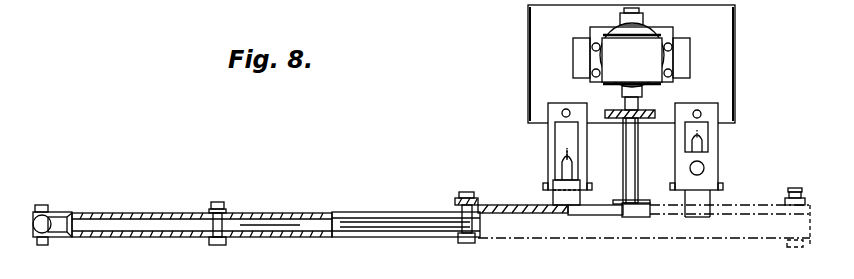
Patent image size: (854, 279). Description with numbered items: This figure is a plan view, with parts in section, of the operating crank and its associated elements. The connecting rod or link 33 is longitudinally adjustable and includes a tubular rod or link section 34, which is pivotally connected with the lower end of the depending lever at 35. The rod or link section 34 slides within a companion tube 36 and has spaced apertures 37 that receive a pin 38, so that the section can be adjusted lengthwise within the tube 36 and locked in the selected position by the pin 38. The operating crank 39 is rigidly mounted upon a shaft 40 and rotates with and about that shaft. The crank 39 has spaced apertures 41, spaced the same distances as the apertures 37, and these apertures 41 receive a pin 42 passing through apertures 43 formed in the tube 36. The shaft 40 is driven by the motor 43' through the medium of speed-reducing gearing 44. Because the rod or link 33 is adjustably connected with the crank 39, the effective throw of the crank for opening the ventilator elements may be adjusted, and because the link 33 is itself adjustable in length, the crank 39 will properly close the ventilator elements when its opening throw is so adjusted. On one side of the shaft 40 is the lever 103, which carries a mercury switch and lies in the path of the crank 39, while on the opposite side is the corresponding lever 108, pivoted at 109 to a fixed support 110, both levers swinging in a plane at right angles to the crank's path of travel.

The connecting rod or link 33 is at (362, 238).
The tubular rod or link section 34 is at (147, 237).
The pivotal connection 35 is at (43, 245).
The companion tube 36 is at (412, 238).
The spaced apertures 37 is at (287, 235).
The pin 38 is at (213, 246).
The operating crank 39 is at (585, 210).
The shaft 40 is at (634, 178).
The spaced apertures 41 is at (510, 213).
The pin 42 is at (463, 243).
The apertures 43 is at (445, 202).
The motor 43' is at (646, 59).
The speed-reducing gearing 44 is at (655, 112).
The lever 103 is at (708, 178).
The lever 108 is at (562, 198).
The pivot 109 is at (588, 191).
The fixed support 110 is at (556, 148).